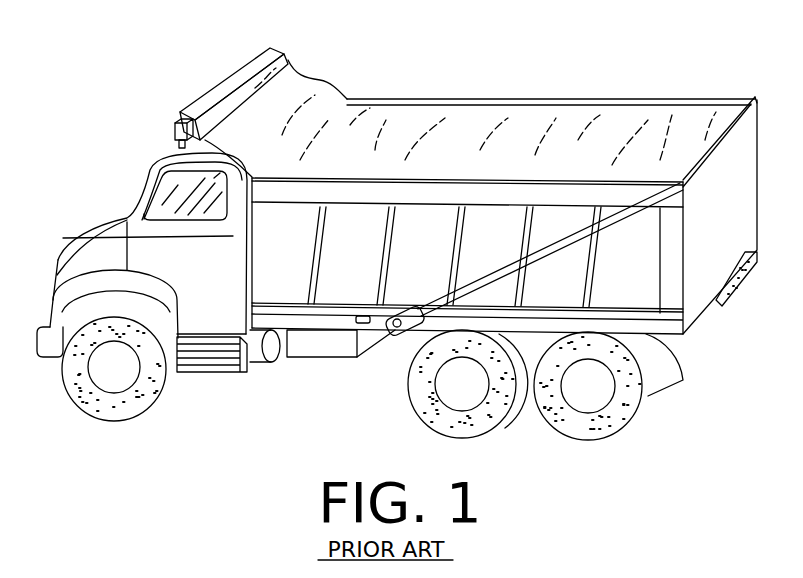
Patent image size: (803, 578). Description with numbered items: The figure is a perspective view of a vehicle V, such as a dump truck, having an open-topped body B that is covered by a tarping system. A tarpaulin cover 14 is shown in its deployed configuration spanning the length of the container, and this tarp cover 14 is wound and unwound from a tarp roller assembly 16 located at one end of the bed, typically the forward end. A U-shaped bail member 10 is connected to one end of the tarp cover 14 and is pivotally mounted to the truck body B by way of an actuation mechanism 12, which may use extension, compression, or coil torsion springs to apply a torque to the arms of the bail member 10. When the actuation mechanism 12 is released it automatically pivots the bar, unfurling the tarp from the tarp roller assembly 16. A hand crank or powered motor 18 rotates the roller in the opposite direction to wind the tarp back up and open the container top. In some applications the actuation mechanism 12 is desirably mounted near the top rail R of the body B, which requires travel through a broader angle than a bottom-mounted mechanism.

The U-shaped bail member 10 is at (620, 217).
The actuation mechanism 12 is at (400, 333).
The tarpaulin cover 14 is at (463, 130).
The tarp roller assembly 16 is at (222, 90).
The hand crank or powered motor 18 is at (172, 134).
The vehicle V is at (84, 210).
The top rail R is at (570, 193).
The open-topped body B is at (348, 270).